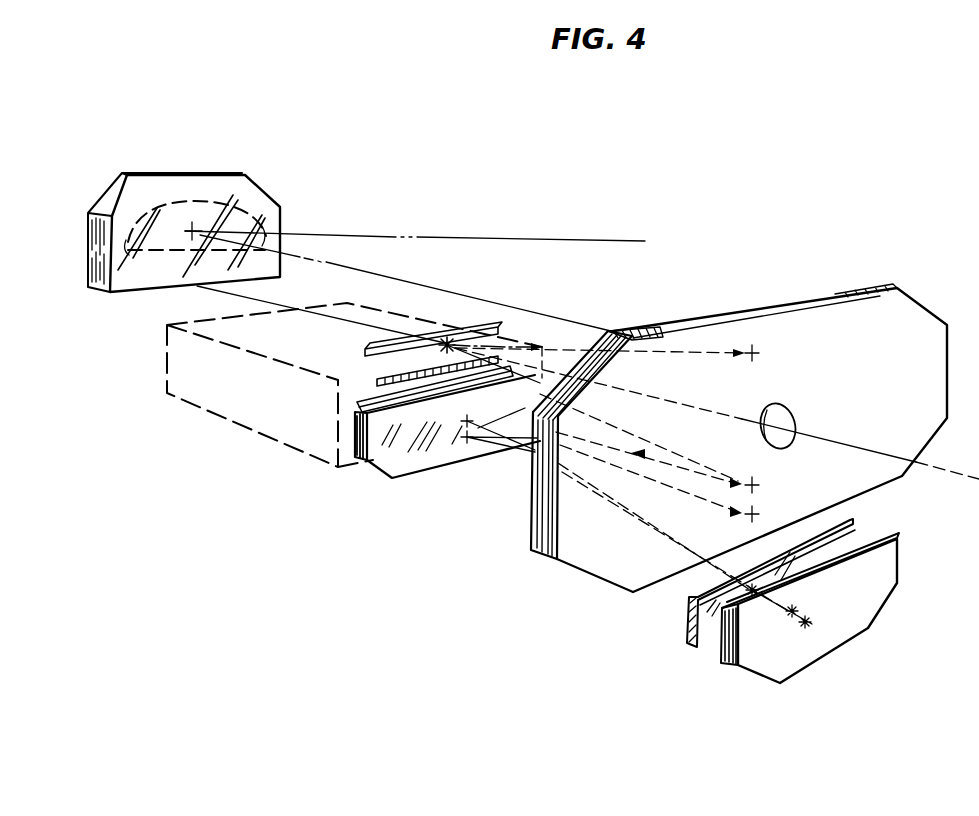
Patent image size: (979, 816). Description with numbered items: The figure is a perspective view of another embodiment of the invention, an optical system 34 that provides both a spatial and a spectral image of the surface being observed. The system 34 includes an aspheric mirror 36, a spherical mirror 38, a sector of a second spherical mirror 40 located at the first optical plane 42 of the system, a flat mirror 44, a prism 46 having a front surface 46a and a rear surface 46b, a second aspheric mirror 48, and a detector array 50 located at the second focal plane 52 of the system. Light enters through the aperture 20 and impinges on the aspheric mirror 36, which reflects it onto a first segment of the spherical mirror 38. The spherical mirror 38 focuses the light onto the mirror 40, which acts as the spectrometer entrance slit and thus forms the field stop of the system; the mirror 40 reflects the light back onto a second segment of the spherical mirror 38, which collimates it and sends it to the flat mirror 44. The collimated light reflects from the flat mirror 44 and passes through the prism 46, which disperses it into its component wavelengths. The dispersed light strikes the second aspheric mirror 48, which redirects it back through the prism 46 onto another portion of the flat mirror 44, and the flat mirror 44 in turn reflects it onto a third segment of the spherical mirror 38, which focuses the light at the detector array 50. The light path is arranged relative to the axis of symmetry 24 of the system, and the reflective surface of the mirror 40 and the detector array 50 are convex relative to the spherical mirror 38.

The aperture 20 is at (203, 203).
The axis of symmetry 24 is at (828, 438).
The system 34 is at (300, 557).
The aspheric mirror 36 is at (248, 187).
The spherical mirror 38 is at (780, 303).
The sector of a second spherical mirror 40 is at (473, 330).
The first optical plane 42 is at (365, 362).
The flat mirror 44 is at (463, 462).
The prism 46 is at (697, 618).
The front surface 46a is at (690, 597).
The rear surface 46b is at (717, 637).
The second aspheric mirror 48 is at (887, 558).
The detector array 50 is at (388, 398).
The second focal plane 52 is at (365, 391).